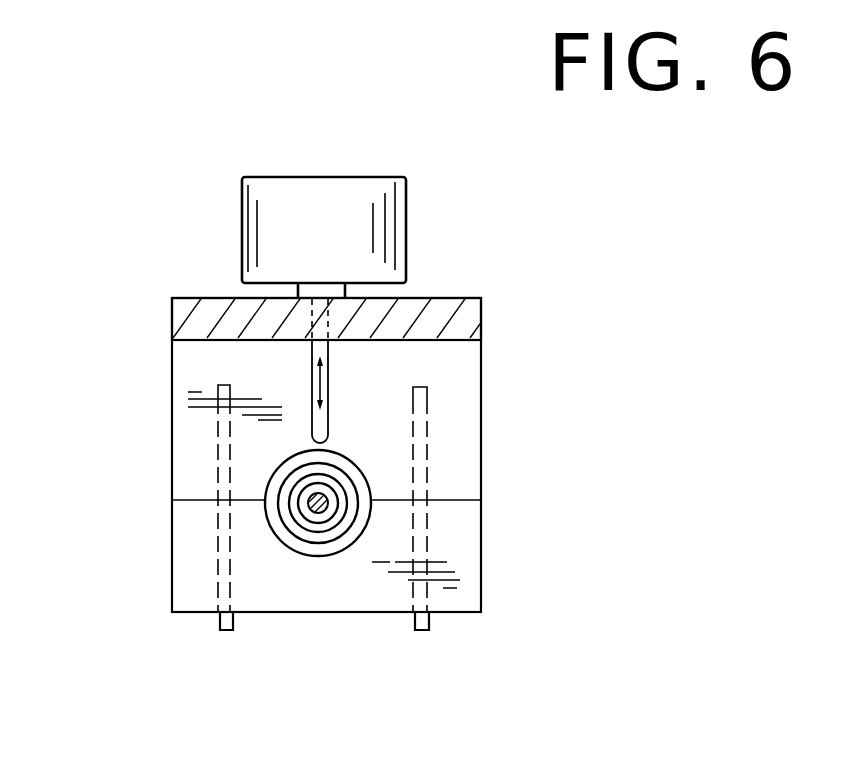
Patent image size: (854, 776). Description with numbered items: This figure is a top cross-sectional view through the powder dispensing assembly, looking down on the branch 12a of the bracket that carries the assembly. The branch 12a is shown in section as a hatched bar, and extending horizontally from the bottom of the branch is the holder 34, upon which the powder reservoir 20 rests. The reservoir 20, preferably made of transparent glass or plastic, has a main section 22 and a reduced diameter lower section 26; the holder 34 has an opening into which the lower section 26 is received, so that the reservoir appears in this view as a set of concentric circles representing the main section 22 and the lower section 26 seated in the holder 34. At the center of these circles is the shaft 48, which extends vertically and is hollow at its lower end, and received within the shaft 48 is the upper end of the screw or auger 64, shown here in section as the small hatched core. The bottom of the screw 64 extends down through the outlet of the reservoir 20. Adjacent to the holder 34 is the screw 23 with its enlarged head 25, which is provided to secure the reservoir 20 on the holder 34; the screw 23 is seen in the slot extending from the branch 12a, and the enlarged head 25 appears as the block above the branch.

The branch 12a is at (428, 322).
The powder reservoir 20 is at (275, 478).
The main section 22 is at (317, 556).
The screw 23 is at (312, 378).
The enlarged head 25 is at (308, 213).
The lower section 26 is at (290, 535).
The holder 34 is at (455, 440).
The shaft 48 is at (328, 515).
The screw 64 is at (322, 505).